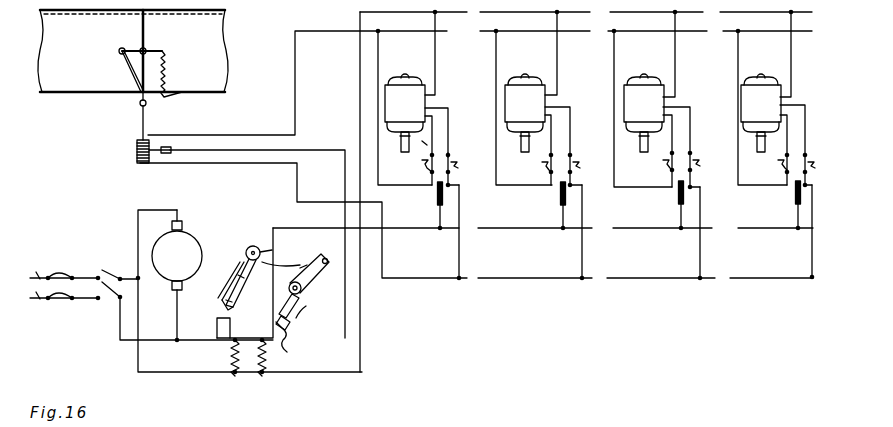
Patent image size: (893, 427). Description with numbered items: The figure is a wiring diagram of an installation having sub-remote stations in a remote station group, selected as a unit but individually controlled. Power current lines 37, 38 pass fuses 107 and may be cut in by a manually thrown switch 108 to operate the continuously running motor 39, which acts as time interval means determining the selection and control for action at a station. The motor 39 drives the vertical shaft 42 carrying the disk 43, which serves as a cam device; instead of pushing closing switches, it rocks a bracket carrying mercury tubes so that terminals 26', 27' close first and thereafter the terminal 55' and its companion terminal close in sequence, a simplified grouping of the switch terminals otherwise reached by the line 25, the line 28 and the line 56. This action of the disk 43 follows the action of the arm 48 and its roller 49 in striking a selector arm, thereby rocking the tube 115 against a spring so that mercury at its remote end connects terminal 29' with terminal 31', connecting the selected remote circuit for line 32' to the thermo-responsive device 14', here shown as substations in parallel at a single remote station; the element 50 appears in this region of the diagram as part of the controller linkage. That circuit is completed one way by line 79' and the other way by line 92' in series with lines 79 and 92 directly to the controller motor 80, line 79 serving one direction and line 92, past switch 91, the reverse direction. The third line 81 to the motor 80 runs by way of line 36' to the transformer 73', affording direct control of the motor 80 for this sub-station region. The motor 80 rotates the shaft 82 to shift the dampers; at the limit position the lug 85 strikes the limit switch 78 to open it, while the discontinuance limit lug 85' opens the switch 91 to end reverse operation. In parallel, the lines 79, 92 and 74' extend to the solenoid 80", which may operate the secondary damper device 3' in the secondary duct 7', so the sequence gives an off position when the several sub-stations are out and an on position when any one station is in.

The secondary damper device 3' is at (138, 75).
The secondary duct 7' is at (133, 67).
The line 74' is at (257, 233).
The line 81 is at (436, 73).
The controller motor 80 is at (410, 102).
The switch 91 is at (433, 153).
The line 79 is at (462, 141).
The limit switch 78 is at (452, 161).
The lug 85 is at (620, 136).
The shaft 82 is at (427, 145).
The line 92 is at (411, 172).
The discontinuance limit lug 85' is at (599, 182).
The line 79' is at (636, 229).
The thermo-responsive device 14' is at (619, 214).
The line 92' is at (591, 128).
The electric current supply line 37 is at (52, 275).
The electric current supply line 38 is at (64, 316).
The fuses 107 is at (70, 288).
The manually thrown switch 108 is at (108, 292).
The motor 39 is at (187, 235).
The line 36' is at (249, 304).
The transformer 73' is at (248, 371).
The line 32' is at (266, 274).
The line 28 is at (217, 315).
The vertical shaft 42 is at (253, 246).
The disk 43 is at (262, 253).
The terminal 26' is at (232, 275).
The terminal 27' is at (223, 279).
The line 25 is at (224, 286).
The line 56 is at (232, 303).
The terminal 31' is at (266, 334).
The link 50 is at (317, 262).
The arm 48 is at (313, 273).
The terminal 55' is at (318, 252).
The roller 49 is at (304, 298).
The terminal 29' is at (306, 323).
The tube 115 is at (300, 320).